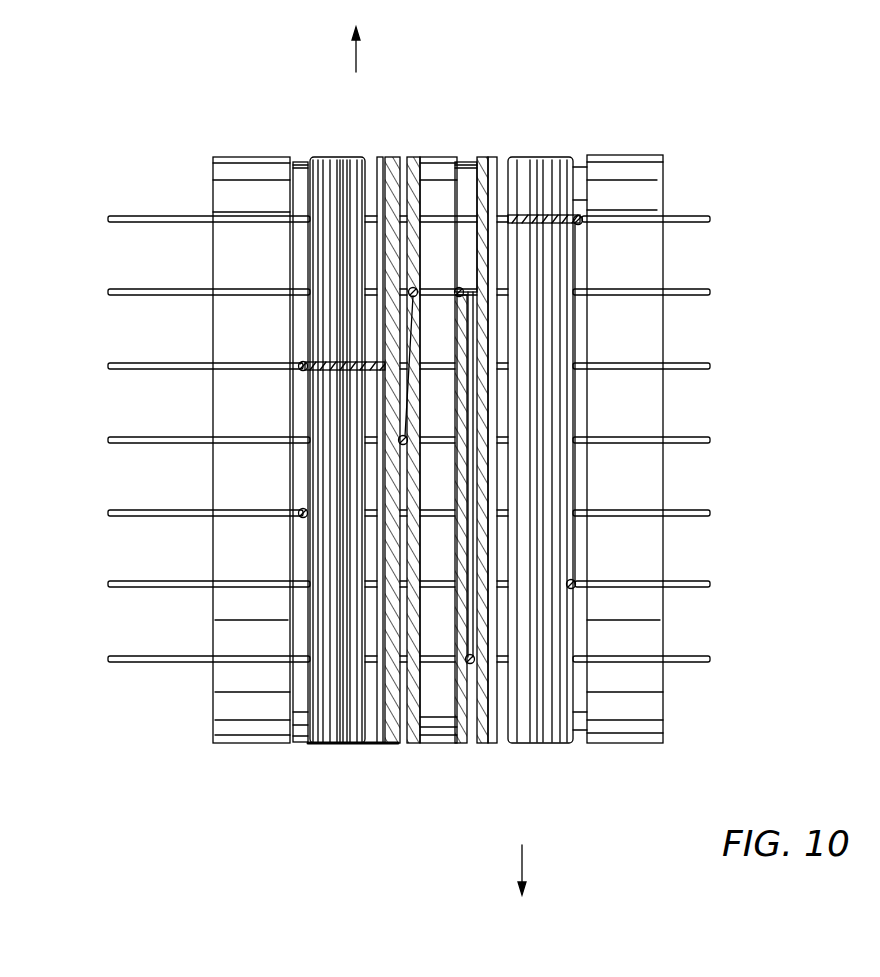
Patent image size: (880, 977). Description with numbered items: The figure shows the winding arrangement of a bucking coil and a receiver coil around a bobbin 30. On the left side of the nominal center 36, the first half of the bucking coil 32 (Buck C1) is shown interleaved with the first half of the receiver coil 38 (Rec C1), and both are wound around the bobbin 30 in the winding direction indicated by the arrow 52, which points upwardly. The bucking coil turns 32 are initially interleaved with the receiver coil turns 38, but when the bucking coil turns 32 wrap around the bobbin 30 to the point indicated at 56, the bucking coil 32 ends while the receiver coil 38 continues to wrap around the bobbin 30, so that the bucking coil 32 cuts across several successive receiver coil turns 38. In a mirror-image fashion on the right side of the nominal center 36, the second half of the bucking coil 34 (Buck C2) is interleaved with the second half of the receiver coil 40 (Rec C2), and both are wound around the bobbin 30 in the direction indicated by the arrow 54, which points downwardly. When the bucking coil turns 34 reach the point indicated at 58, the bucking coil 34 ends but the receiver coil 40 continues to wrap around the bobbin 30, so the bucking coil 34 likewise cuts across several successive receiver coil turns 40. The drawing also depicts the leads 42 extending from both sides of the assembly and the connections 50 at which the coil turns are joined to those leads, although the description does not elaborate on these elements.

The bobbin 30 is at (666, 158).
The first half of the bucking coil 32 is at (394, 155).
The second half of the bucking coil 34 is at (495, 157).
The nominal center 36 is at (450, 156).
The first half of the receiver coil 38 is at (360, 155).
The second half of the receiver coil 40 is at (570, 157).
The leads 42 is at (122, 223).
The crimp connections 50 is at (300, 510).
The arrow 52 is at (352, 50).
The arrow 54 is at (522, 860).
The point where the first bucking coil half ends 56 is at (385, 362).
The point where the second bucking coil half ends 58 is at (500, 224).